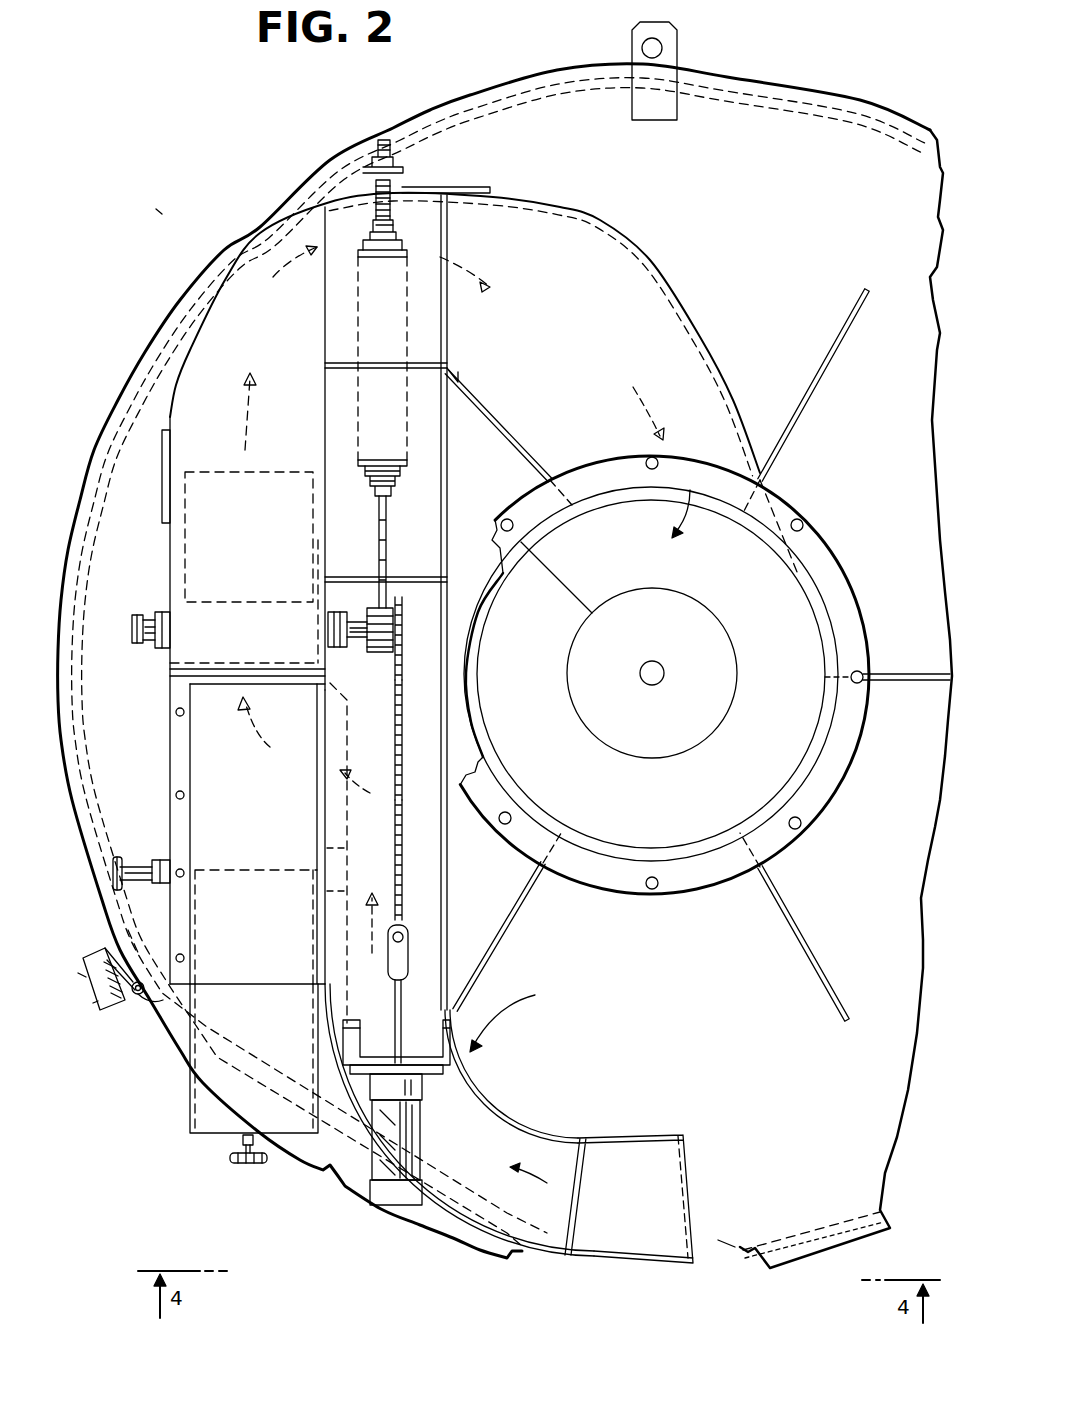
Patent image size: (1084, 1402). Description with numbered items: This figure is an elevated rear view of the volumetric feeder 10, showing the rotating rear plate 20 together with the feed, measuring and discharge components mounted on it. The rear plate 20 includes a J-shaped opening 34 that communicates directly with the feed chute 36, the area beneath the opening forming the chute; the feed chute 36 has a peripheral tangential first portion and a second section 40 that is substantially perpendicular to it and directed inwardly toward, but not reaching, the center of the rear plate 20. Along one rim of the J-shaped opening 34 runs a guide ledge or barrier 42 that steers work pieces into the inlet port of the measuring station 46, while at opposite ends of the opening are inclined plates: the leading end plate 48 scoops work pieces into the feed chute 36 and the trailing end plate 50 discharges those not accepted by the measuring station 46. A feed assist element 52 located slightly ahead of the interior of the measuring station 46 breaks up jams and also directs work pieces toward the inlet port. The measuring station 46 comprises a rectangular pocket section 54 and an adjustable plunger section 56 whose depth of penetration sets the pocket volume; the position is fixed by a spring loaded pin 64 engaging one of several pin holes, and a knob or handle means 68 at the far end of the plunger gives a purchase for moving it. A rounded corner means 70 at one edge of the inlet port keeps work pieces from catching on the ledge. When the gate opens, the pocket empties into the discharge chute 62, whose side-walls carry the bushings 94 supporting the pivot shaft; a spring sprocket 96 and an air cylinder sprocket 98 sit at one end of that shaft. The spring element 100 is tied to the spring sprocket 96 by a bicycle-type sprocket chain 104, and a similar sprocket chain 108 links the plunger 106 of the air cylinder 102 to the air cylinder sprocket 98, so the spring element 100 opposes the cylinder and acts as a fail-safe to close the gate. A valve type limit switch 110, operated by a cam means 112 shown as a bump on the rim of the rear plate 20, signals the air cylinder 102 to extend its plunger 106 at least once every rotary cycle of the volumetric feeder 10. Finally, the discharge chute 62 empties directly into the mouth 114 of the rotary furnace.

The volumetric feeder 10 is at (159, 211).
The rear plate 20 is at (160, 212).
The J-shaped opening 34 is at (459, 1120).
The feed chute 36 is at (438, 863).
The second section 40 is at (320, 760).
The guide ledge or barrier 42 is at (347, 732).
The measuring station 46 is at (170, 755).
The leading end plate 48 is at (645, 1206).
The trailing end plate 50 is at (428, 533).
The feed assist element 52 is at (356, 830).
The pocket section 54 is at (258, 793).
The plunger section 56 is at (268, 1058).
The discharge chute 62 is at (560, 303).
The spring loaded pin 64 is at (157, 837).
The knob or handle means 68 is at (247, 1166).
The rounded corner means 70 is at (320, 716).
The bushings 94 is at (160, 610).
The spring sprocket 96 is at (380, 656).
The air cylinder sprocket 98 is at (399, 648).
The spring element 100 is at (357, 285).
The air cylinder 102 is at (358, 1178).
The sprocket chain 104 is at (383, 596).
The plunger 106 is at (392, 1006).
The sprocket chain 108 is at (396, 752).
The valve type limit switch 110 is at (113, 1000).
The cam means 112 is at (145, 955).
The mouth 114 is at (652, 550).